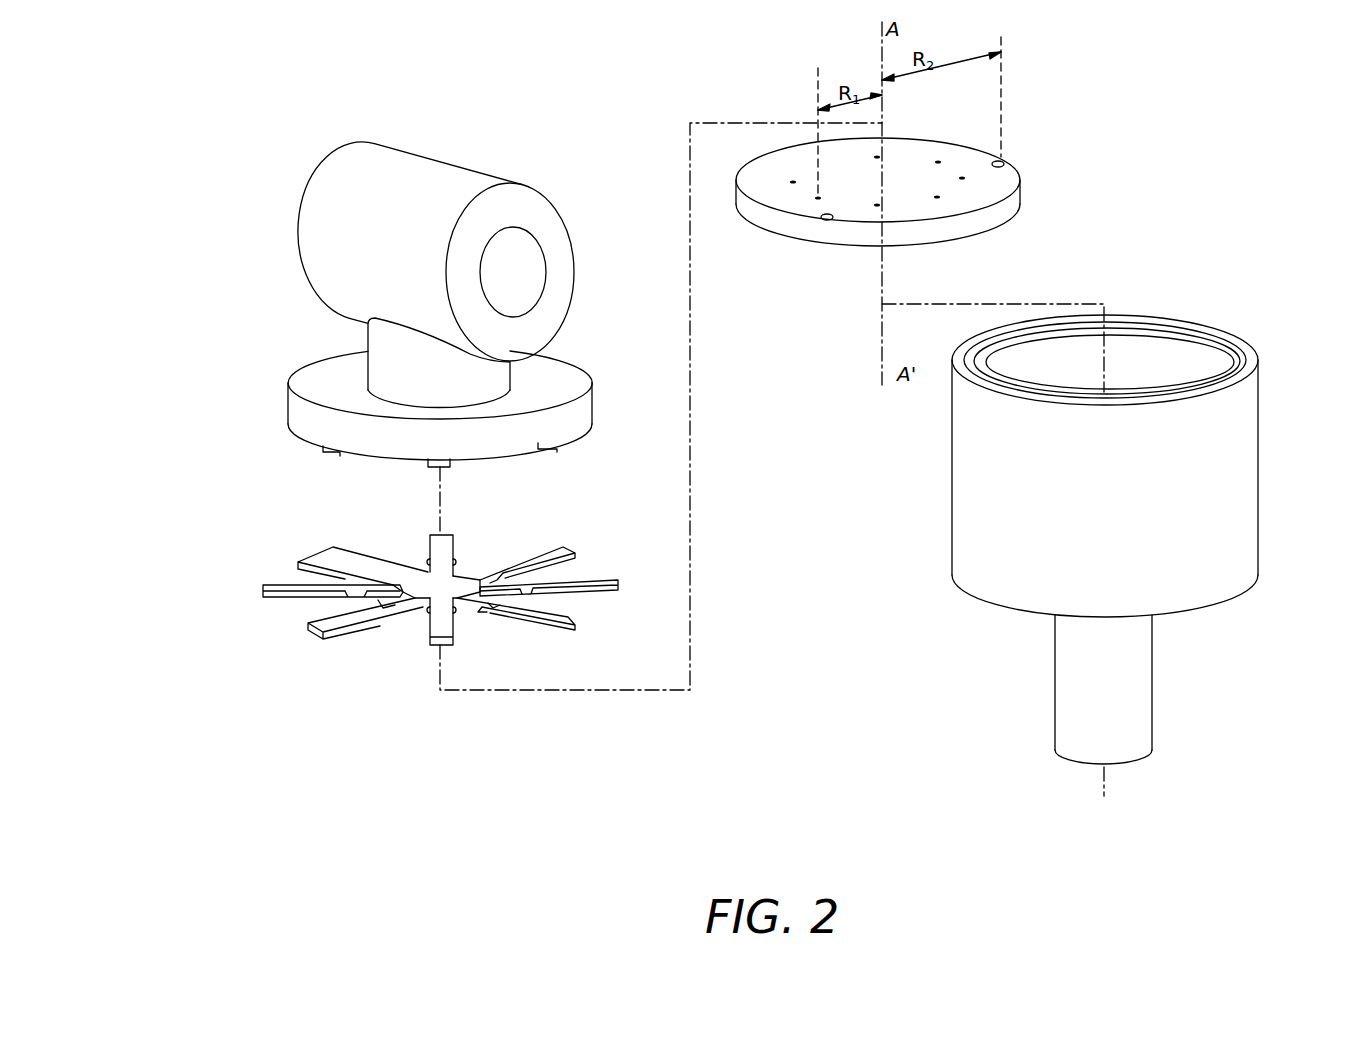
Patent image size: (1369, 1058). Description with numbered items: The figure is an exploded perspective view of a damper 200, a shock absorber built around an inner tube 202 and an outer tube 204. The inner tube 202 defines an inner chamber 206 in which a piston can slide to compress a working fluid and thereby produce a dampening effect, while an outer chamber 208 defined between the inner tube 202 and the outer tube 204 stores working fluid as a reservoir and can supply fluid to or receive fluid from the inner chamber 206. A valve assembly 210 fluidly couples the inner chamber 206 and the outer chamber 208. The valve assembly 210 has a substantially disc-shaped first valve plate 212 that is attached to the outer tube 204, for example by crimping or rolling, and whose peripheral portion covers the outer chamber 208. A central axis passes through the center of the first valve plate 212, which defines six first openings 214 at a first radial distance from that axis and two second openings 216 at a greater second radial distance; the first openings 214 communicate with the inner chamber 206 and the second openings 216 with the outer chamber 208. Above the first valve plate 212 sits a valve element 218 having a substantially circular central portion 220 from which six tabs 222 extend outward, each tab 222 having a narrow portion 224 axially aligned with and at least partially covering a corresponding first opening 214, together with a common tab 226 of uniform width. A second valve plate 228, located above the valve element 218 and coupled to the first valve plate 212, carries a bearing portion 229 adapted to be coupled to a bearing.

The damper 200 is at (207, 92).
The inner tube 202 is at (1193, 331).
The outer tube 204 is at (1258, 488).
The inner chamber 206 is at (1179, 372).
The outer chamber 208 is at (1245, 357).
The valve assembly 210 is at (591, 168).
The first valve plate 212 is at (1050, 165).
The first opening 214 is at (877, 205).
The second opening 216 is at (1000, 164).
The valve element 218 is at (226, 613).
The central portion 220 is at (313, 568).
The tab 222 is at (270, 598).
The narrow portion 224 is at (383, 608).
The common tab 226 is at (328, 553).
The second valve plate 228 is at (257, 240).
The bearing portion 229 is at (316, 170).